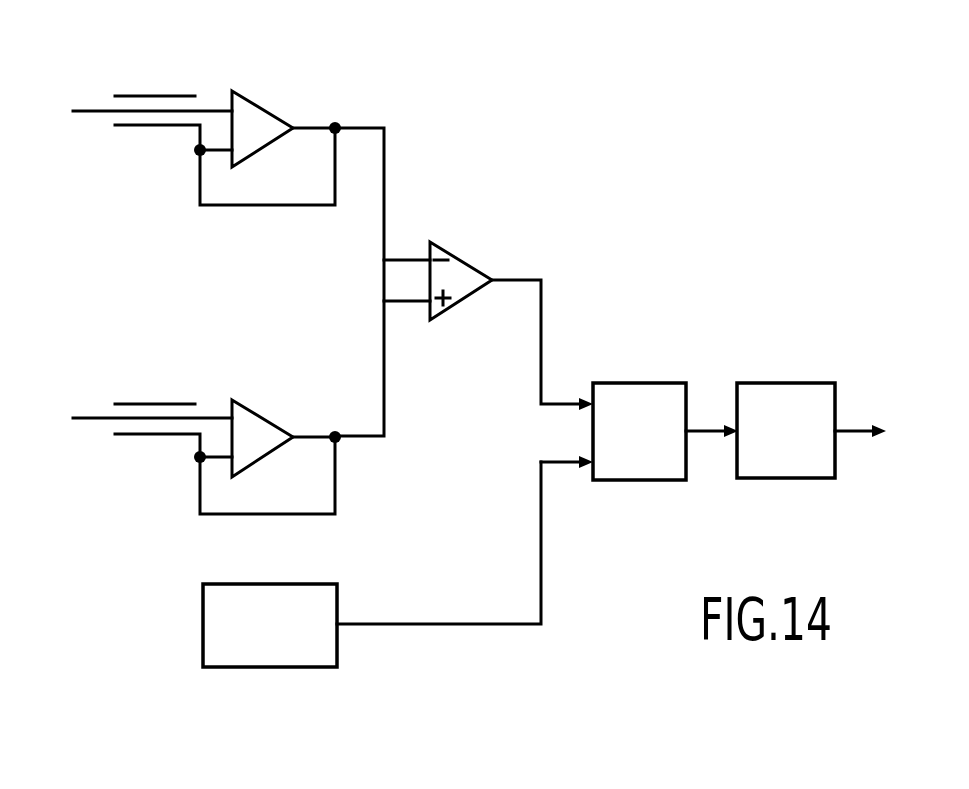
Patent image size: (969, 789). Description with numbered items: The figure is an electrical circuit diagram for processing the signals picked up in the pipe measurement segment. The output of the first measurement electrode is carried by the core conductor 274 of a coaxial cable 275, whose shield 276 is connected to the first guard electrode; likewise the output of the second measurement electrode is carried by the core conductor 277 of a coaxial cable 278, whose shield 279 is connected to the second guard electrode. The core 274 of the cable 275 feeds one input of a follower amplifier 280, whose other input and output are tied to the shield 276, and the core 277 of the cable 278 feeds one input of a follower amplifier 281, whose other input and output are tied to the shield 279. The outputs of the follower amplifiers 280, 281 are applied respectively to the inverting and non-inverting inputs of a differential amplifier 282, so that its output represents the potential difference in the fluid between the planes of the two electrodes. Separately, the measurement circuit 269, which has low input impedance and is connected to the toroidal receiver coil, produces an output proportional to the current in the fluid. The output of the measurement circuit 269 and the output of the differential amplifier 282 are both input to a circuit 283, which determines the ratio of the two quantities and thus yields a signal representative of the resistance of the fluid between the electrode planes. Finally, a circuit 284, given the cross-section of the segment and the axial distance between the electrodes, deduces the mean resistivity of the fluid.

The measurement circuit 269 is at (259, 658).
The core conductor 274 is at (92, 108).
The coaxial cable 275 is at (152, 93).
The shield 276 is at (148, 128).
The core conductor 277 is at (148, 437).
The coaxial cable 278 is at (152, 401).
The shield 279 is at (92, 417).
The follower amplifier 280 is at (250, 127).
The follower amplifier 281 is at (250, 437).
The differential amplifier 282 is at (457, 270).
The ratio circuit 283 is at (635, 408).
The resistivity circuit 284 is at (788, 397).